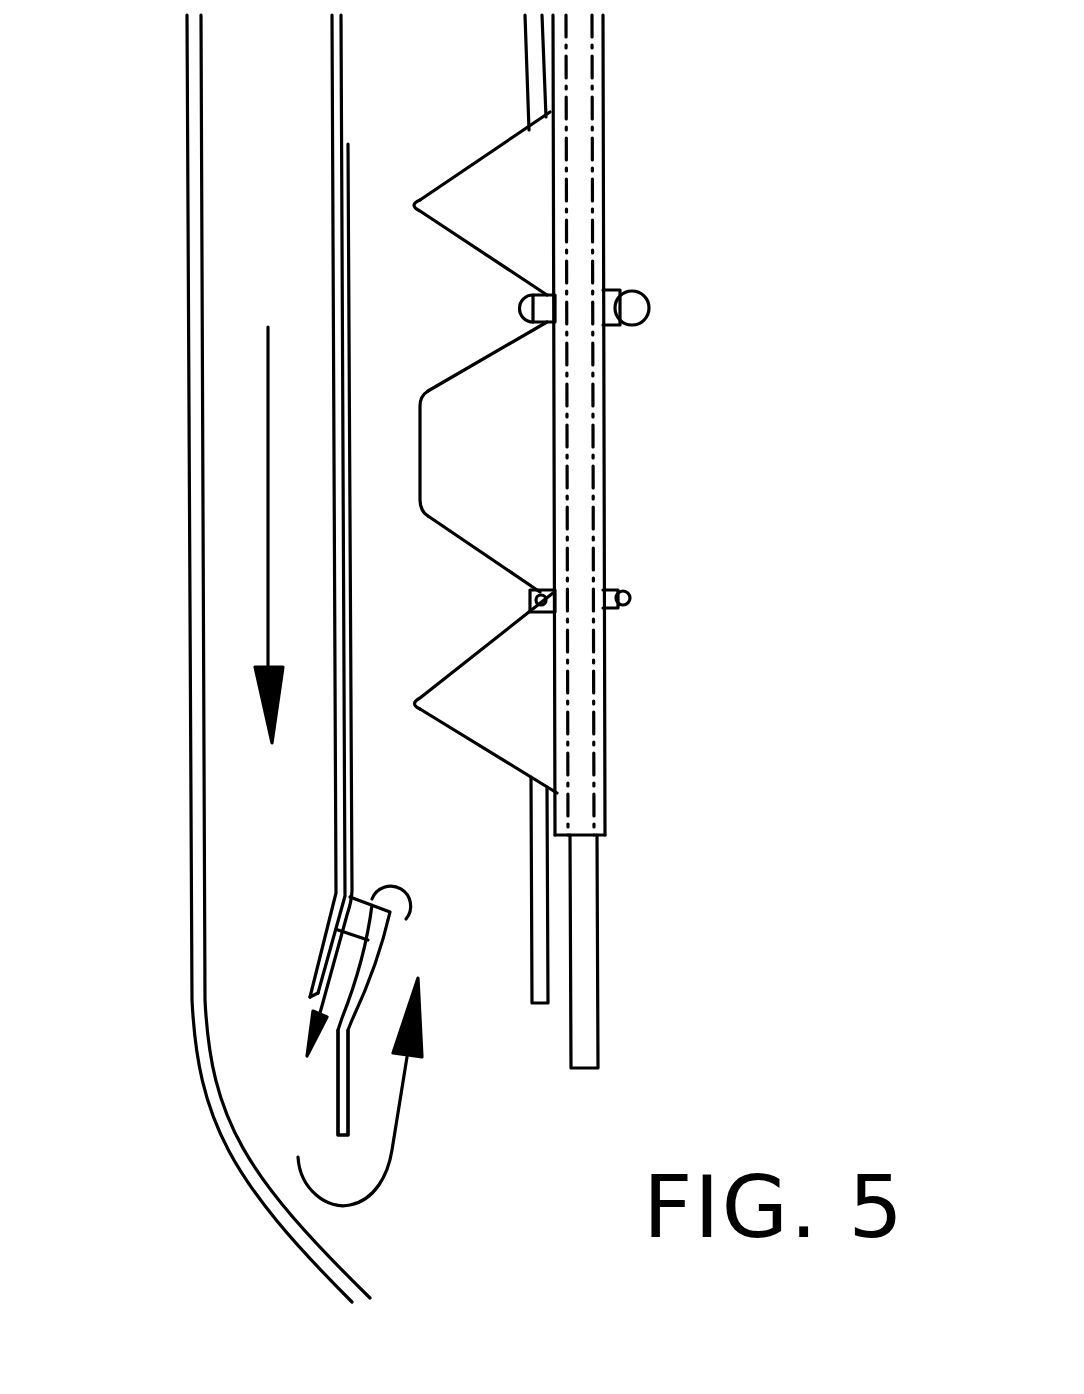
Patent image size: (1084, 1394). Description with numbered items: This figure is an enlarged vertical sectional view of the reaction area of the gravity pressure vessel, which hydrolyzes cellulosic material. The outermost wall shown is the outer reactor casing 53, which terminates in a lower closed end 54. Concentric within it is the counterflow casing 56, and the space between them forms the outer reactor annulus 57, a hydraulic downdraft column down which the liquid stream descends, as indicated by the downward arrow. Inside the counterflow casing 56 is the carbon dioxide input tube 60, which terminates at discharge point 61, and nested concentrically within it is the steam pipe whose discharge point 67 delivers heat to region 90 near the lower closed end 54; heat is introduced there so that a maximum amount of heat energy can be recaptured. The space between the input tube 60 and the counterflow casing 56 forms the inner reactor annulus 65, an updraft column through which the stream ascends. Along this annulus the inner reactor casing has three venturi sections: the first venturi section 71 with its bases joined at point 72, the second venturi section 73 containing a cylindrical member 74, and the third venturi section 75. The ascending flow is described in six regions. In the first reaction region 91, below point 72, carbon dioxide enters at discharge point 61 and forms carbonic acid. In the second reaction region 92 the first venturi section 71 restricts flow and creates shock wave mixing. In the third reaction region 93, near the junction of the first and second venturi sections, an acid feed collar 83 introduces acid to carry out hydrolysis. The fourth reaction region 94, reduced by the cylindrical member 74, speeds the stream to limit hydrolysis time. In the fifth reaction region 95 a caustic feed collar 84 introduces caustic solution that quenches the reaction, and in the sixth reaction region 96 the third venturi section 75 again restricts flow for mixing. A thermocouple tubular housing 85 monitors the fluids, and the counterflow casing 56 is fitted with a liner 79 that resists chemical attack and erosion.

The outer reactor tubular casing 53 is at (187, 402).
The lower closed end 54 is at (248, 1187).
The counterflow tubular casing 56 is at (341, 82).
The outer reactor annulus 57 is at (295, 504).
The carbon dioxide input tube 60 is at (605, 790).
The discharge point 61 is at (605, 835).
The inner reactor annulus 65 is at (485, 106).
The discharge point 67 is at (597, 1068).
The first venturi section 71 is at (488, 752).
The junction of the two bases 72 is at (430, 690).
The second venturi section 73 is at (470, 370).
The cylindrically shaped member 74 is at (420, 488).
The third venturi section 75 is at (497, 145).
The liner 79 is at (353, 858).
The acid feed collar 83 is at (630, 598).
The caustic feed collar 84 is at (640, 305).
The thermocouple tubular housing 85 is at (548, 920).
The region 90 is at (407, 1051).
The first reaction region 91 is at (488, 792).
The second reaction region 92 is at (455, 662).
The third reaction region 93 is at (466, 578).
The fourth reaction region 94 is at (392, 453).
The fifth reaction region 95 is at (469, 340).
The sixth reaction region 96 is at (449, 236).